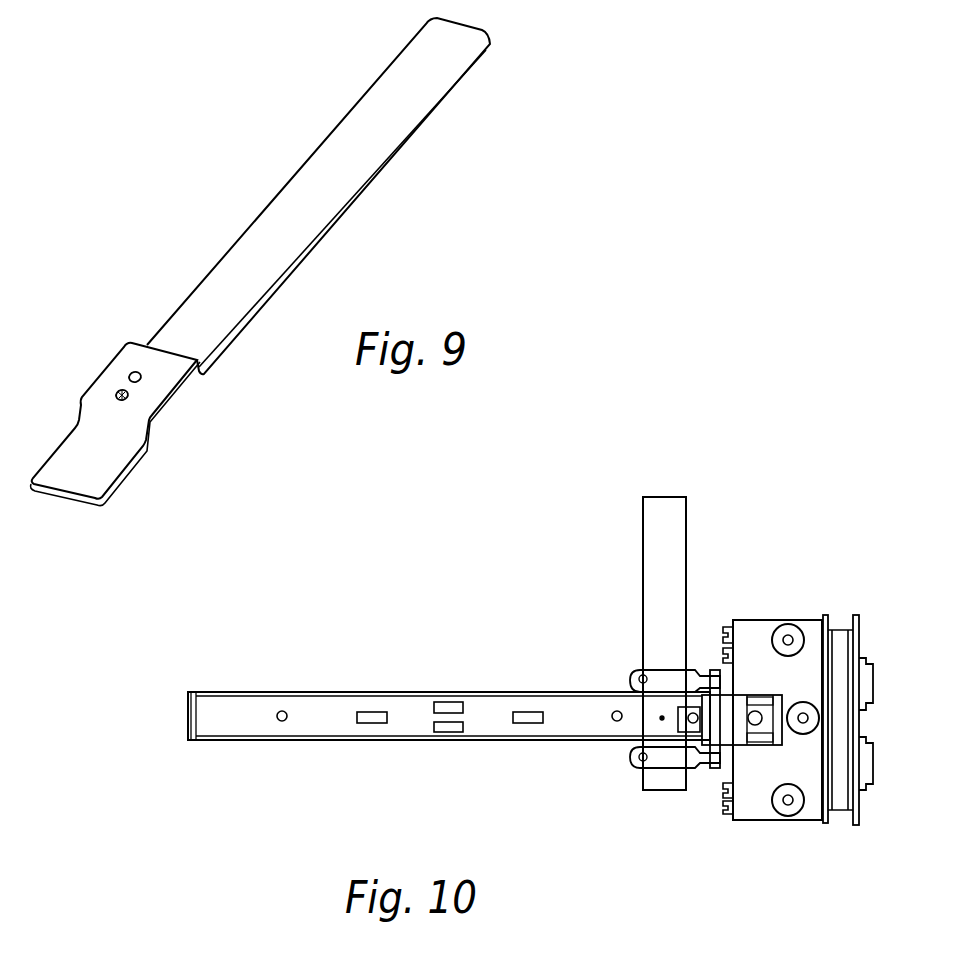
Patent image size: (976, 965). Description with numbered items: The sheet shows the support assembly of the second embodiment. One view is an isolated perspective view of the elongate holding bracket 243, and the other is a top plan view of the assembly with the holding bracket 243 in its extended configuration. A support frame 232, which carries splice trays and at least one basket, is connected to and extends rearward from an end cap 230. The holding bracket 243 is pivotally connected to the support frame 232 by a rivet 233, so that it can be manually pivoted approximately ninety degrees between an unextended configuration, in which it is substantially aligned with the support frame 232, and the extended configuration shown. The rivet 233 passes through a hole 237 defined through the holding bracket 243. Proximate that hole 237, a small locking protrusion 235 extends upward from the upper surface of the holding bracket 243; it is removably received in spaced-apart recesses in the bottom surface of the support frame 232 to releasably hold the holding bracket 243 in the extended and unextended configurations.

In FIG. 10, the end cap 230 is at (815, 620).
In FIG. 10, the support frame 232 is at (285, 740).
In FIG. 10, the rivet 233 is at (661, 717).
In FIG. 9, the locking protrusion 235 is at (114, 395).
In FIG. 9, the hole 237 is at (128, 373).
In FIG. 9, the holding bracket 243 is at (363, 193).
In FIG. 10, the holding bracket 243 is at (665, 497).